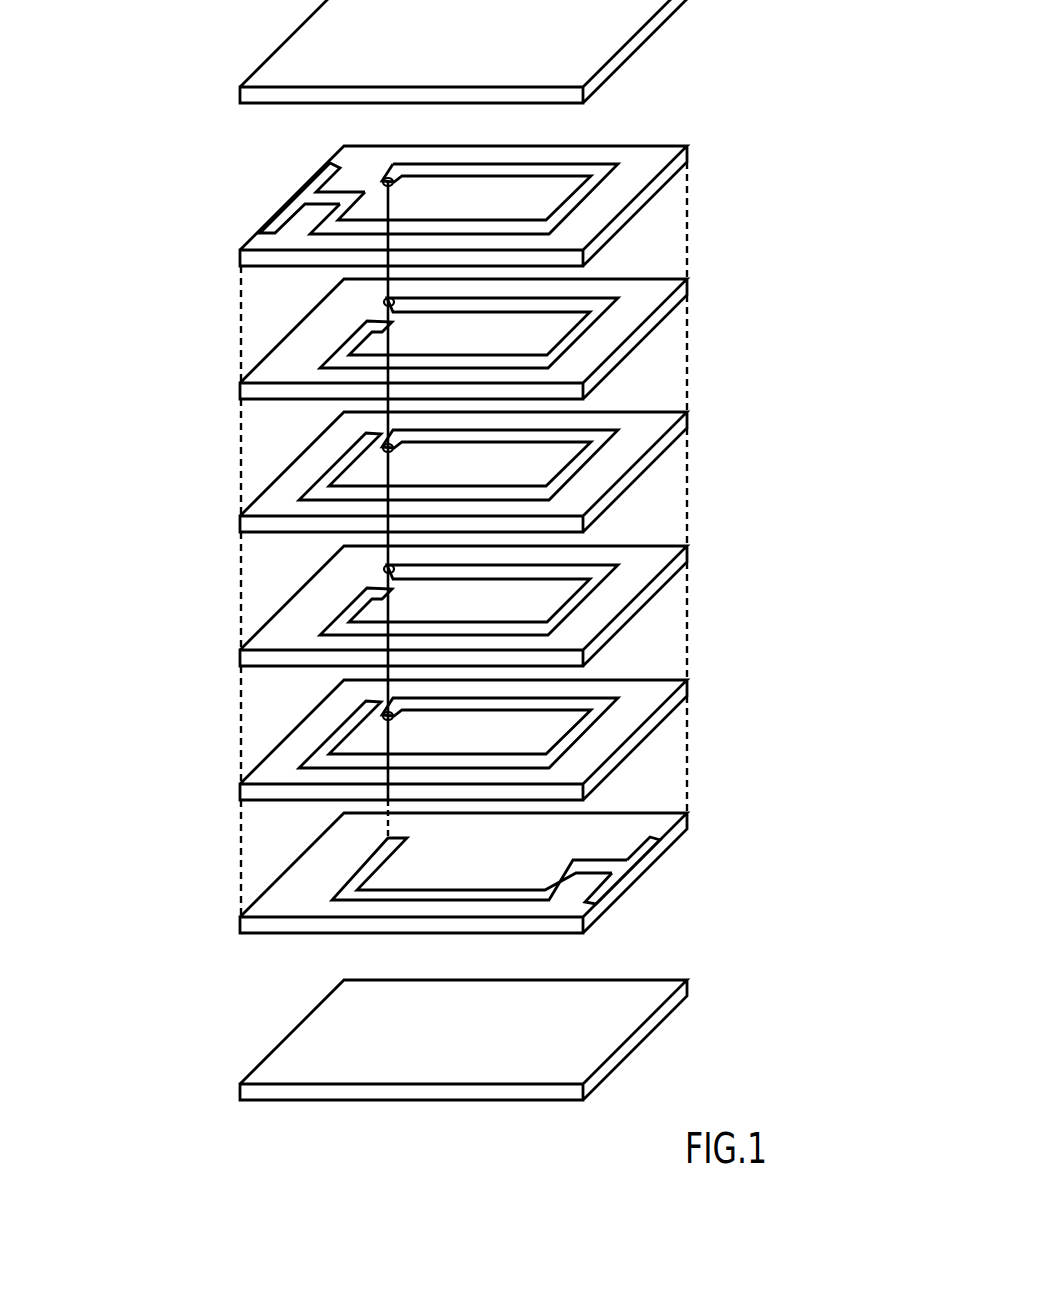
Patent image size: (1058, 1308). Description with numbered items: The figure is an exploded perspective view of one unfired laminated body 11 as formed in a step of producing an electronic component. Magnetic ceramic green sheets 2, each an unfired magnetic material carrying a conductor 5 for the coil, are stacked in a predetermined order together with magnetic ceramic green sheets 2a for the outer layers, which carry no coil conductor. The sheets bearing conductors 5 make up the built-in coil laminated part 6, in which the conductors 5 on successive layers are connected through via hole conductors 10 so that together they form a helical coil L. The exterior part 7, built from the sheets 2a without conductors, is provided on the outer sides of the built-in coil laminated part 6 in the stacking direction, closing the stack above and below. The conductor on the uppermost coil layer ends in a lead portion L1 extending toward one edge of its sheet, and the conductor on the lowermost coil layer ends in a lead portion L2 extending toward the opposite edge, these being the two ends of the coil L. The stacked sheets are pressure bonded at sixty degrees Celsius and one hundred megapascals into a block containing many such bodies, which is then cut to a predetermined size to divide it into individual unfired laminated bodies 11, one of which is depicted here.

The unfired laminated body 11 is at (115, 160).
The exterior part 7 is at (290, 36).
The magnetic ceramic green sheet 2 is at (650, 162).
The magnetic ceramic green sheet for outer layers 2a is at (628, 15).
The built-in coil laminated part 6 is at (149, 940).
The helical coil L is at (604, 425).
The conductor for coil 5 is at (563, 218).
The via hole conductor 10 is at (384, 179).
The first lead conductor L1 is at (302, 206).
The second lead conductor L2 is at (594, 871).